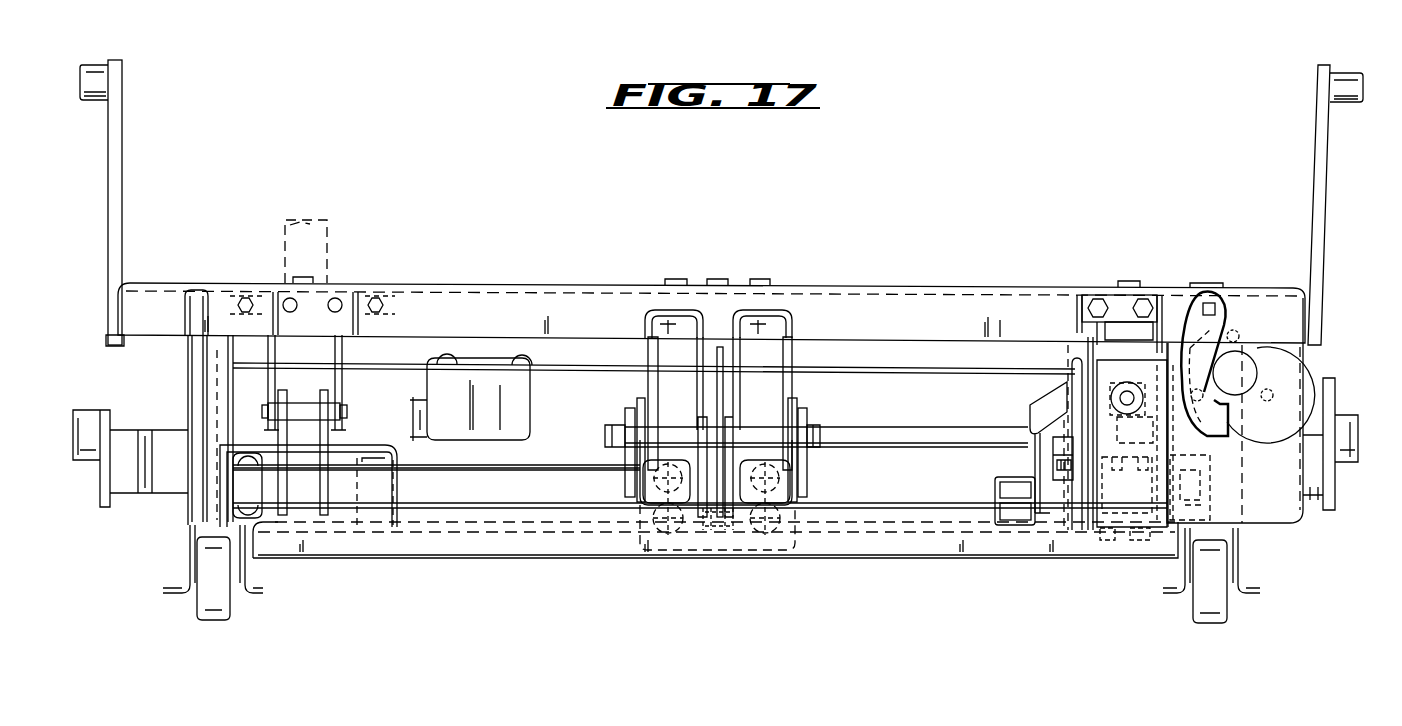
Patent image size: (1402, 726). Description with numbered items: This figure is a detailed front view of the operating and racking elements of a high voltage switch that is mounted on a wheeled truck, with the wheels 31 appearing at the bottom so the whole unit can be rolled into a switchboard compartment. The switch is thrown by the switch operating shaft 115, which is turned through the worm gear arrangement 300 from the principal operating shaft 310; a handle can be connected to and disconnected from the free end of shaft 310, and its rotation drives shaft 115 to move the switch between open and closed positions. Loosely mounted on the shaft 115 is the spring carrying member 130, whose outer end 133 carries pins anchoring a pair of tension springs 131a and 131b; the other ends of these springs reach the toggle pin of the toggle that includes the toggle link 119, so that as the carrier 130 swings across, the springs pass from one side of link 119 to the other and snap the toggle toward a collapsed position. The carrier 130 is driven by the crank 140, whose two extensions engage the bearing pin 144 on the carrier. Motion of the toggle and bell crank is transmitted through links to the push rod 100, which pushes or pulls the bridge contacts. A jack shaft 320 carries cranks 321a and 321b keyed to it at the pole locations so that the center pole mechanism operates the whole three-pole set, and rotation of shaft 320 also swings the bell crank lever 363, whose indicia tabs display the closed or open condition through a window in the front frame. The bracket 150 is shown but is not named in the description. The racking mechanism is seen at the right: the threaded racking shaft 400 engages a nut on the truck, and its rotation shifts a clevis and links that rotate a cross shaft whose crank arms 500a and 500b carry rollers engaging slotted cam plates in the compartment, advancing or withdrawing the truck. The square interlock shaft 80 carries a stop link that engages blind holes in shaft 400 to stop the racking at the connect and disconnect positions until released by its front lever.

The wheels 31 is at (231, 614).
The square interlock shaft 80 is at (1216, 305).
The push rod 100 is at (332, 253).
The switch operating shaft 115 is at (928, 427).
The toggle link 119 is at (722, 389).
The spring carrying member 130 is at (802, 508).
The tension spring 131a is at (643, 530).
The tension spring 131b is at (780, 533).
The outer end of the spring carrying member 133 is at (740, 520).
The crank 140 is at (630, 412).
The bearing pin 144 is at (607, 435).
The mounting bracket 150 is at (810, 321).
The worm gear arrangement 300 is at (1110, 394).
The principal operating shaft 310 is at (1130, 385).
The jack shaft 320 is at (575, 463).
The crank 321a is at (1083, 540).
The crank 321b is at (333, 441).
The bell crank lever 363 is at (1013, 527).
The racking shaft 400 is at (1258, 376).
The crank arm 500a is at (1358, 430).
The crank arm 500b is at (68, 415).